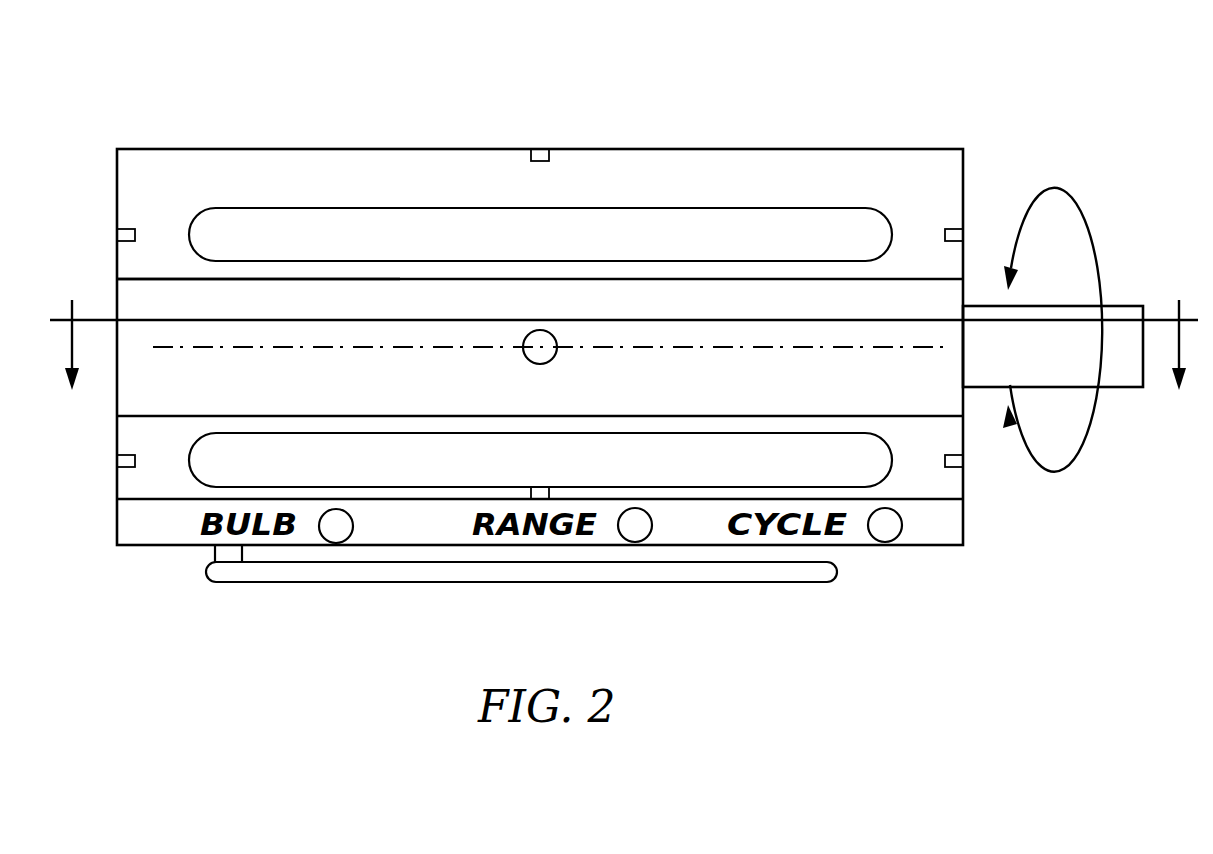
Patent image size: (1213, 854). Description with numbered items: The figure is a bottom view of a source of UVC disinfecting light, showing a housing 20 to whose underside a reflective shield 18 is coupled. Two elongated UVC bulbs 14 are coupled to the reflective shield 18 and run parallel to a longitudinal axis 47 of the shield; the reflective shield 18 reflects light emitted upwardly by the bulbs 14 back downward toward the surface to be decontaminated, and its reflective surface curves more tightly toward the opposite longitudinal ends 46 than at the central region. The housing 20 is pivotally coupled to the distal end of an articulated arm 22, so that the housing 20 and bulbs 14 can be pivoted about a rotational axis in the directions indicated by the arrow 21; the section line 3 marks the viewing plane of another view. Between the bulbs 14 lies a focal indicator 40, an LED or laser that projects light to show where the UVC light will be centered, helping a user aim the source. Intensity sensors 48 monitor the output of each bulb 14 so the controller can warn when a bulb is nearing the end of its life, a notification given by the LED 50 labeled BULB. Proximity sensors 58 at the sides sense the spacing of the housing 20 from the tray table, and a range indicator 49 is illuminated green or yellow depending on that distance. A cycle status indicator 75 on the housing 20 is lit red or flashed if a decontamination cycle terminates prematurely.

The section line 3- 3 is at (625, 363).
The UVC bulbs 14 is at (307, 261).
The reflective shield 18 is at (897, 197).
The housing 20 is at (756, 149).
The arrow 21 is at (1053, 489).
The articulated arm 22 is at (1124, 375).
The focal indicator 40 is at (553, 355).
The longitudinal ends 46 is at (117, 290).
The longitudinal axis 47 is at (333, 347).
The intensity sensor 48 is at (542, 150).
The range indicator 49 is at (637, 530).
The LED 50 is at (336, 528).
The proximity sensors 58 is at (125, 233).
The cycle status indicator 75 is at (887, 530).